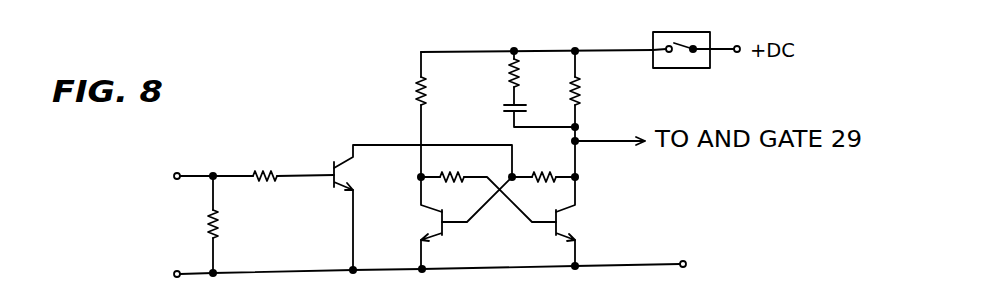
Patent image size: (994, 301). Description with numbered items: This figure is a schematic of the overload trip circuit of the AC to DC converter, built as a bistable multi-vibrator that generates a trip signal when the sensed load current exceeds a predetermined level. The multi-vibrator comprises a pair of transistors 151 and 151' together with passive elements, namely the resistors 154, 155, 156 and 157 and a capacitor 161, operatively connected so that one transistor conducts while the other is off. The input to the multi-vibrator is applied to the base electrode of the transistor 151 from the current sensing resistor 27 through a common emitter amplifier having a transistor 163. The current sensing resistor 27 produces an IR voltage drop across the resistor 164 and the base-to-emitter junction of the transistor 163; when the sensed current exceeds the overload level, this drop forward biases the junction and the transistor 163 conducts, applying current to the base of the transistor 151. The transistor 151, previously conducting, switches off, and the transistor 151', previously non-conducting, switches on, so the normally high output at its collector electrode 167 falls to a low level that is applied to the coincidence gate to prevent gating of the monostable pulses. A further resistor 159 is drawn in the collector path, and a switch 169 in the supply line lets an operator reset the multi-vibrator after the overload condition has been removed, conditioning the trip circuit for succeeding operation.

The current sensing resistor 27 is at (207, 220).
The transistor 151 is at (414, 225).
The transistor 151' is at (591, 225).
The resistor 154 is at (440, 181).
The resistor 155 is at (535, 180).
The resistor 156 is at (413, 83).
The resistor 157 is at (508, 70).
The resistor 159 is at (582, 83).
The capacitor 161 is at (505, 107).
The transistor 163 is at (339, 176).
The resistor 164 is at (275, 167).
The collector electrode 167 is at (598, 140).
The switch 169 is at (673, 32).